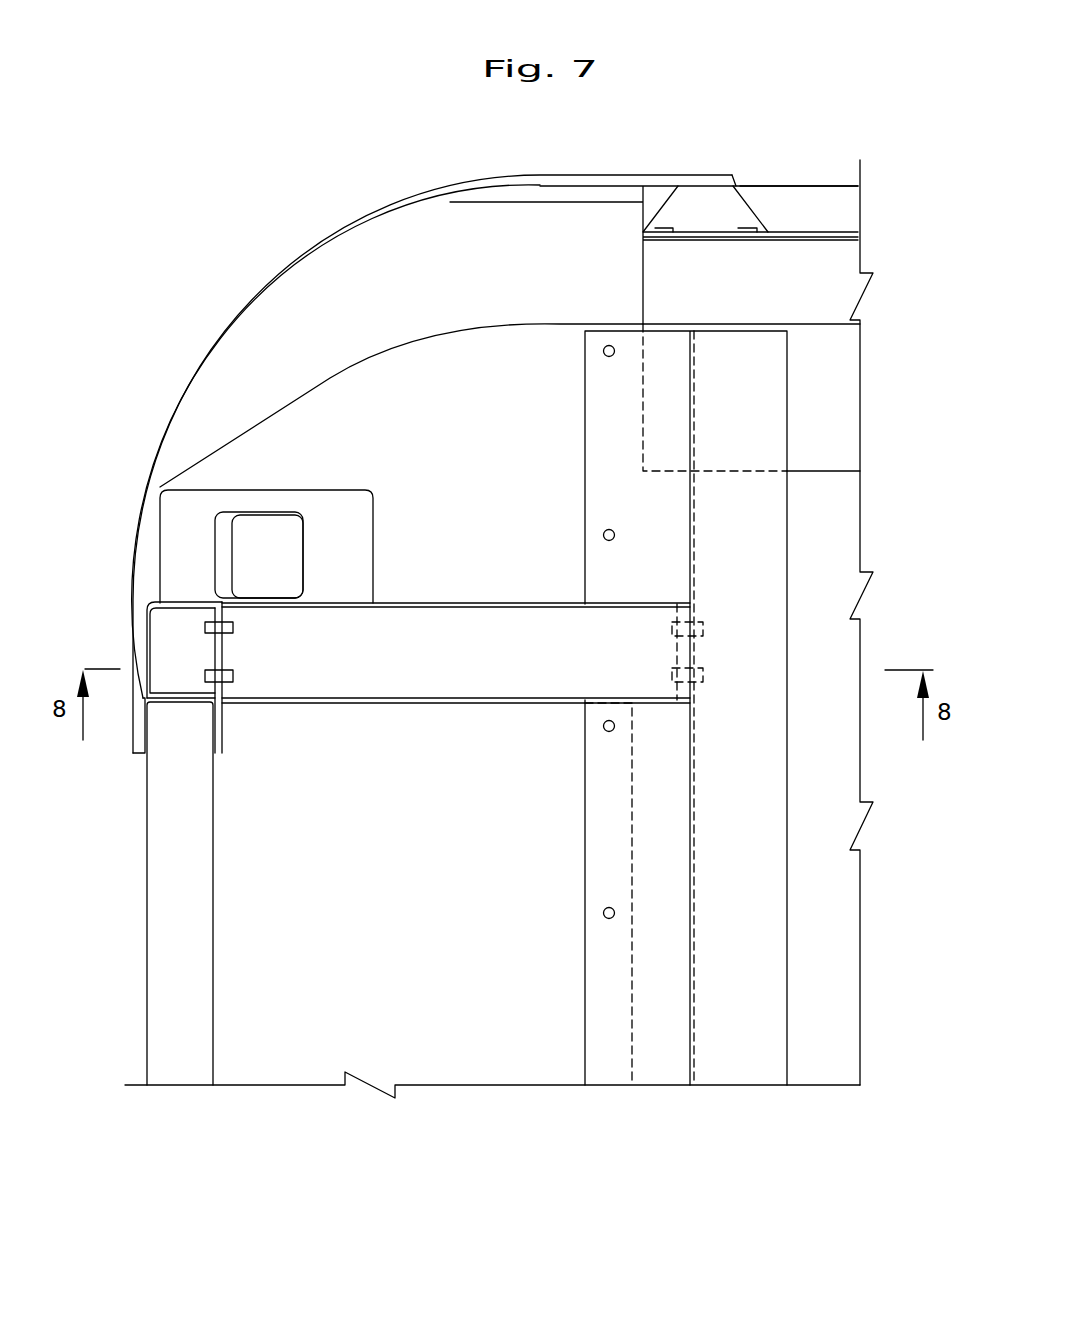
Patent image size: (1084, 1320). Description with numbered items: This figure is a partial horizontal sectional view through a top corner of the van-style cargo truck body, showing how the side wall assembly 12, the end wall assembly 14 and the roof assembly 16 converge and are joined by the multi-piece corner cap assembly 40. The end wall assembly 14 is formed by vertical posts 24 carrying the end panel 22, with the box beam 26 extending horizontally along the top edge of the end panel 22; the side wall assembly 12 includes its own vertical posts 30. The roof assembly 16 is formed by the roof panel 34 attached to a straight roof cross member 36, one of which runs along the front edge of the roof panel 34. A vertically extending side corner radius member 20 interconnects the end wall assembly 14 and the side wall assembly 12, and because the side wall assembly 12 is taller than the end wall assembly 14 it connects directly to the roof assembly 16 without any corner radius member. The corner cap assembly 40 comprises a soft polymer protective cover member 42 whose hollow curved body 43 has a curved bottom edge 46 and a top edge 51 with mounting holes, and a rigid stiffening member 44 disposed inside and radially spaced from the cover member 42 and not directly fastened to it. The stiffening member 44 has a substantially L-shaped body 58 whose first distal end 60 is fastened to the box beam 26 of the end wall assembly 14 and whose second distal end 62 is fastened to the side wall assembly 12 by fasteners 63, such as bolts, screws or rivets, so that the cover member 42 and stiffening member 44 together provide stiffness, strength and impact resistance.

The side wall assembly 12 is at (826, 1066).
The end wall assembly 14 is at (130, 1003).
The roof assembly 16 is at (804, 170).
The side corner radius member 20 is at (283, 1068).
The end panel 22 is at (147, 916).
The vertical post 24 is at (188, 880).
The box beam 26 is at (152, 622).
The vertical post 30 is at (695, 972).
The roof panel 34 is at (843, 183).
The straight roof cross member 36 is at (757, 208).
The multi-piece corner cap assembly 40 is at (233, 314).
The protective cover member 42 is at (353, 216).
The hollow curved body 43 is at (176, 417).
The stiffening member 44 is at (487, 590).
The curved bottom edge 46 is at (137, 755).
The top edge 51 is at (735, 183).
The L-shaped body 58 is at (462, 688).
The first distal end 60 is at (242, 686).
The second distal end 62 is at (662, 630).
The fasteners 63 is at (233, 627).